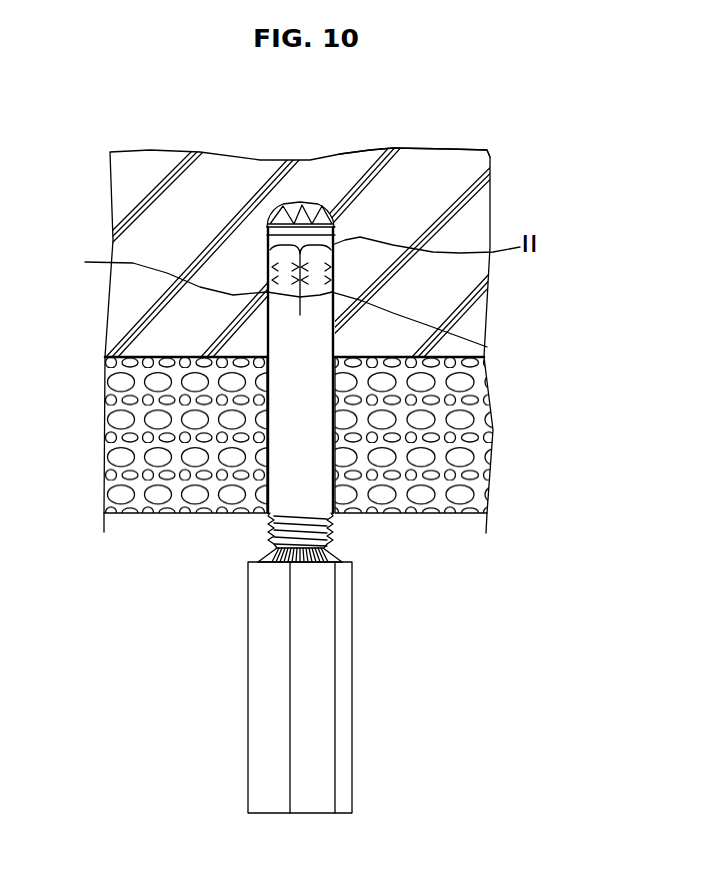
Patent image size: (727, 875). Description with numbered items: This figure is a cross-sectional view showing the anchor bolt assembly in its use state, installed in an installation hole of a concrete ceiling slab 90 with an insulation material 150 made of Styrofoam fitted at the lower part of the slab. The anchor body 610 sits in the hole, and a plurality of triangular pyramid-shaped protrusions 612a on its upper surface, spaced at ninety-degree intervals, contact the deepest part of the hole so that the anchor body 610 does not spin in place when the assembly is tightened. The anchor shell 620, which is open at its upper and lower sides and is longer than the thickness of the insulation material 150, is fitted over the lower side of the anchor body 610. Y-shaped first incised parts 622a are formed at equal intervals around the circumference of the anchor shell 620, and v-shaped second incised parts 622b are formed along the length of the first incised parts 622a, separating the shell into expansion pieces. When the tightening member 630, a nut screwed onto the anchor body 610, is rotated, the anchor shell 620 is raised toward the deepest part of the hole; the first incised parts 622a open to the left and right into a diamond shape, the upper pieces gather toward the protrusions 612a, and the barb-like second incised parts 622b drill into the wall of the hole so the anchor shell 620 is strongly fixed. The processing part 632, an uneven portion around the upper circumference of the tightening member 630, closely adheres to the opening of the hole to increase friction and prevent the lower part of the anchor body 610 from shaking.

The ceiling slab 90 is at (442, 172).
The insulation material 150 is at (487, 415).
The anchor body 610 is at (267, 250).
The triangular pyramid-shaped protrusion 612a is at (297, 204).
The anchor shell 620 is at (275, 347).
The first incised part 622a is at (487, 347).
The second incised part 622b is at (185, 272).
The tightening member 630 is at (347, 648).
The processing part 632 is at (262, 562).